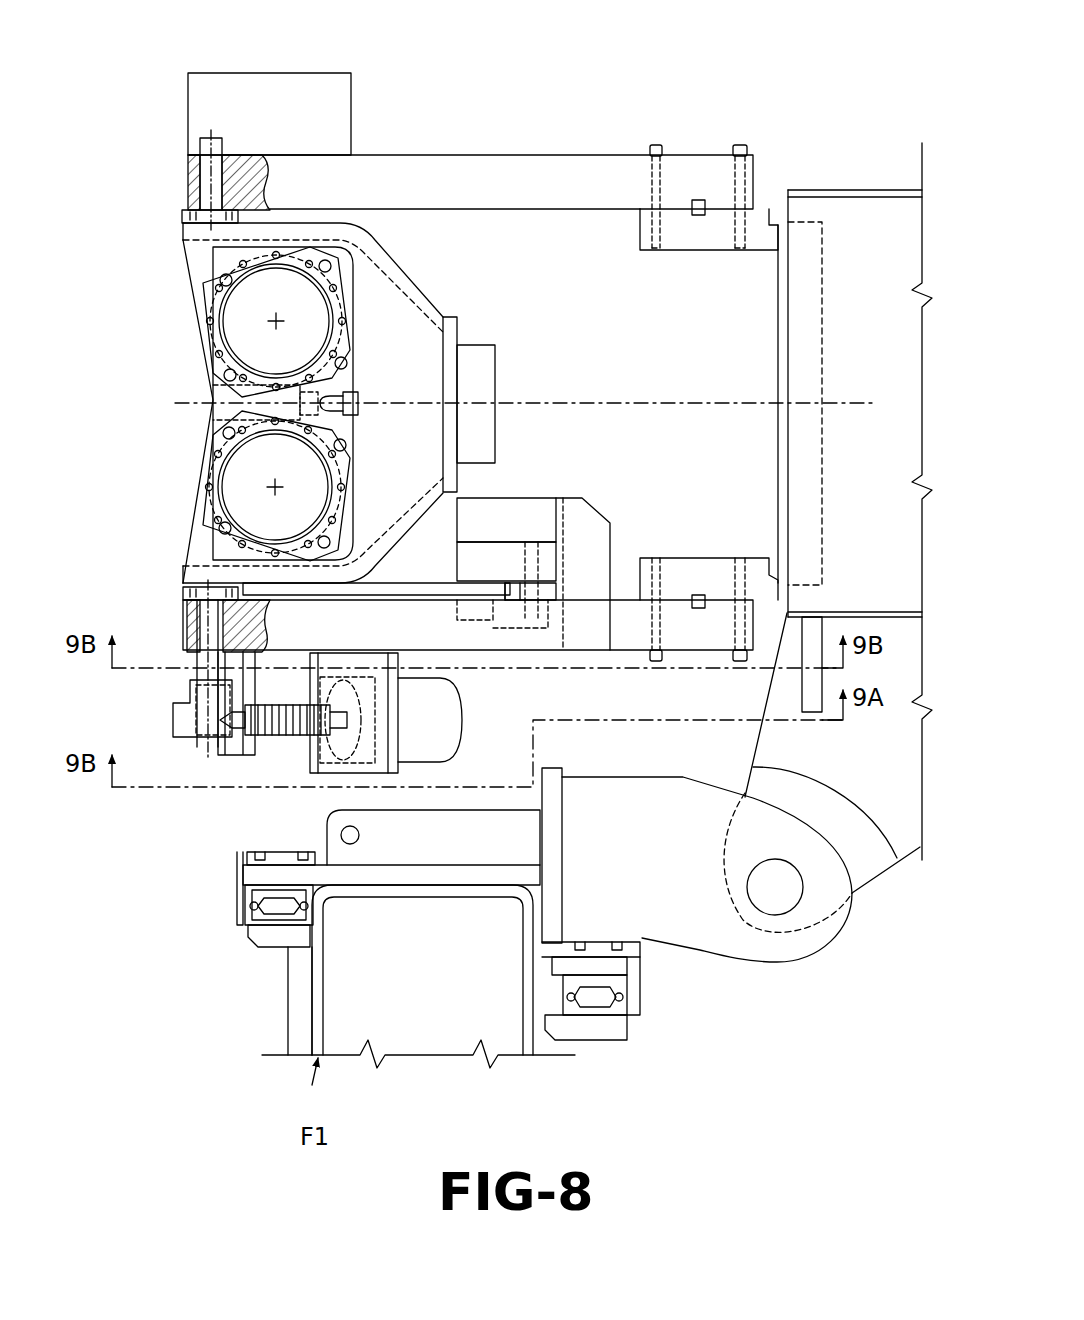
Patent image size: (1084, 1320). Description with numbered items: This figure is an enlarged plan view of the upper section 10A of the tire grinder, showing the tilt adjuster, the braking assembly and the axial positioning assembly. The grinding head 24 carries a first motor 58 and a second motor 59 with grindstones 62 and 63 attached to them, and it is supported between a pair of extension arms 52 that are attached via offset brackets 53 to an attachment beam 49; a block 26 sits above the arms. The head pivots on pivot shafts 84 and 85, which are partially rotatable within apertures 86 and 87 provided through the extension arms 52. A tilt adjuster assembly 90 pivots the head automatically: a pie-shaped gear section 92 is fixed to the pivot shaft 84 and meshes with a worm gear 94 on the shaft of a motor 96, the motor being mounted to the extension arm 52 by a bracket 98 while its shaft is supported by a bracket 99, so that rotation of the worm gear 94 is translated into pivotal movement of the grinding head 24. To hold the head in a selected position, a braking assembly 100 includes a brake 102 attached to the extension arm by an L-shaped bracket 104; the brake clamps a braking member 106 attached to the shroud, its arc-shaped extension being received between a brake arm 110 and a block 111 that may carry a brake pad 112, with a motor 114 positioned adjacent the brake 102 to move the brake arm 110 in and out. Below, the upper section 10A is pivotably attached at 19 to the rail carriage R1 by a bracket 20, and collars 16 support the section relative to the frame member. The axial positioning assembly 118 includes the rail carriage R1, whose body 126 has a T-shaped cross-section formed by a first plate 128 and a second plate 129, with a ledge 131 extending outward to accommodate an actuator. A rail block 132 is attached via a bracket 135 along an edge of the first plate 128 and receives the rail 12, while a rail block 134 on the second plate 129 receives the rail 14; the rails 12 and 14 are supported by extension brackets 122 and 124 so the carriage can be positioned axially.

The upper housing block 26 is at (310, 100).
The pivot shaft 85 is at (206, 150).
The aperture 87 is at (193, 185).
The grinding head 24 is at (422, 283).
The grindstone 63 is at (214, 335).
The second motor 59 is at (214, 352).
The first motor 58 is at (214, 457).
The grindstone 62 is at (213, 475).
The brake 102 is at (452, 560).
The braking assembly 100 is at (541, 494).
The motor 114 is at (530, 531).
The block 111 is at (514, 572).
The L-shaped bracket 104 is at (583, 528).
The braking member 106 is at (420, 596).
The brake pad 112 is at (508, 595).
The brake arm 110 is at (472, 613).
The offset bracket 53 is at (703, 238).
The extension arm 52 is at (700, 178).
The attachment beam 49 is at (805, 330).
The pivot shaft 84 is at (210, 592).
The aperture 86 is at (196, 632).
The tilt adjuster assembly 90 is at (285, 727).
The pie-shaped gear section 92 is at (180, 722).
The bracket 99 is at (235, 752).
The worm gear 94 is at (290, 708).
The bracket 98 is at (395, 738).
The motor 96 is at (428, 736).
The bracket 20 is at (908, 800).
The upper section 10A is at (890, 870).
The pivotal attachment 19 is at (775, 893).
The collar 16 is at (663, 828).
The axial positioning assembly 118 is at (705, 978).
The first plate 128 is at (556, 905).
The body 126 is at (575, 823).
The ledge 131 is at (500, 848).
The rail carriage R1 is at (408, 850).
The second plate 129 is at (360, 878).
The rail block 134 is at (272, 893).
The rail 14 is at (276, 910).
The extension bracket 124 is at (276, 945).
The bracket 135 is at (556, 967).
The rail block 132 is at (566, 997).
The rail 12 is at (605, 1002).
The extension bracket 122 is at (603, 1033).